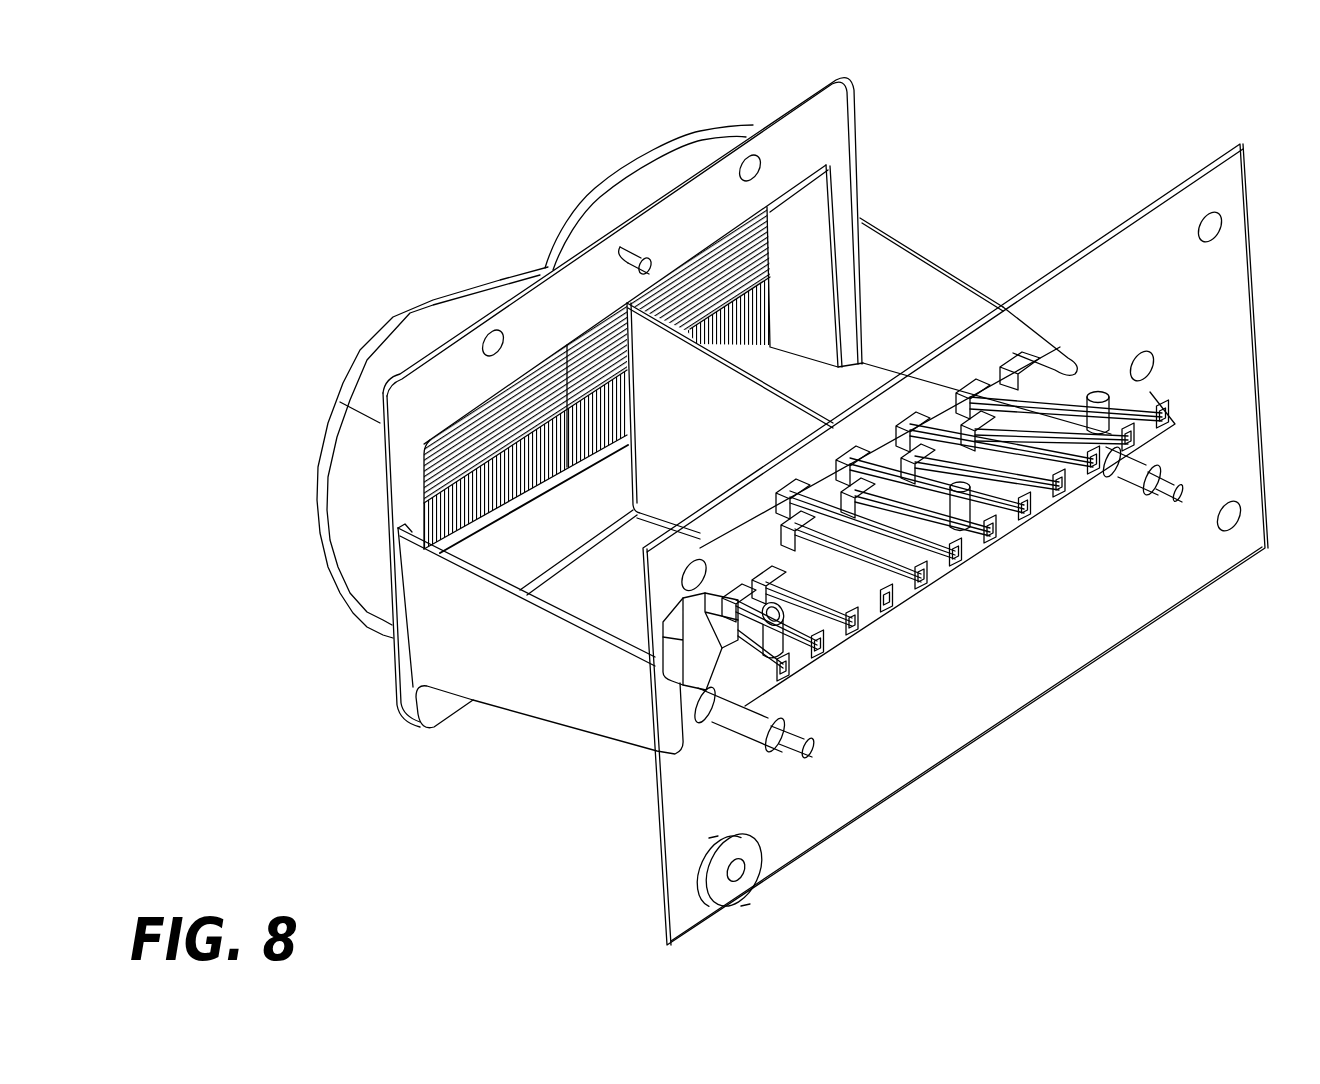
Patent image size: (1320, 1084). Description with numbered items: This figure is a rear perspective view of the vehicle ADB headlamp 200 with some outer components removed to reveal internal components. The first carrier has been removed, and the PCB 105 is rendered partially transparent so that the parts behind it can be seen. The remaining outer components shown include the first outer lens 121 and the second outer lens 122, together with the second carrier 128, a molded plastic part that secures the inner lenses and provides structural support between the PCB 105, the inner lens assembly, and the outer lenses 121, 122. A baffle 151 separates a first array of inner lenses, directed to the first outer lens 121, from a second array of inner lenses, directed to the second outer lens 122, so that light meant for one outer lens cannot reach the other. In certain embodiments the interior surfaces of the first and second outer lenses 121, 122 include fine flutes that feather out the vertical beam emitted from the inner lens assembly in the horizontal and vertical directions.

The vehicle ADB headlamp 200 is at (345, 104).
The first outer lens 121 is at (625, 197).
The second outer lens 122 is at (437, 327).
The second carrier 128 is at (505, 710).
The baffle 151 is at (703, 425).
The PCB 105 is at (1015, 660).